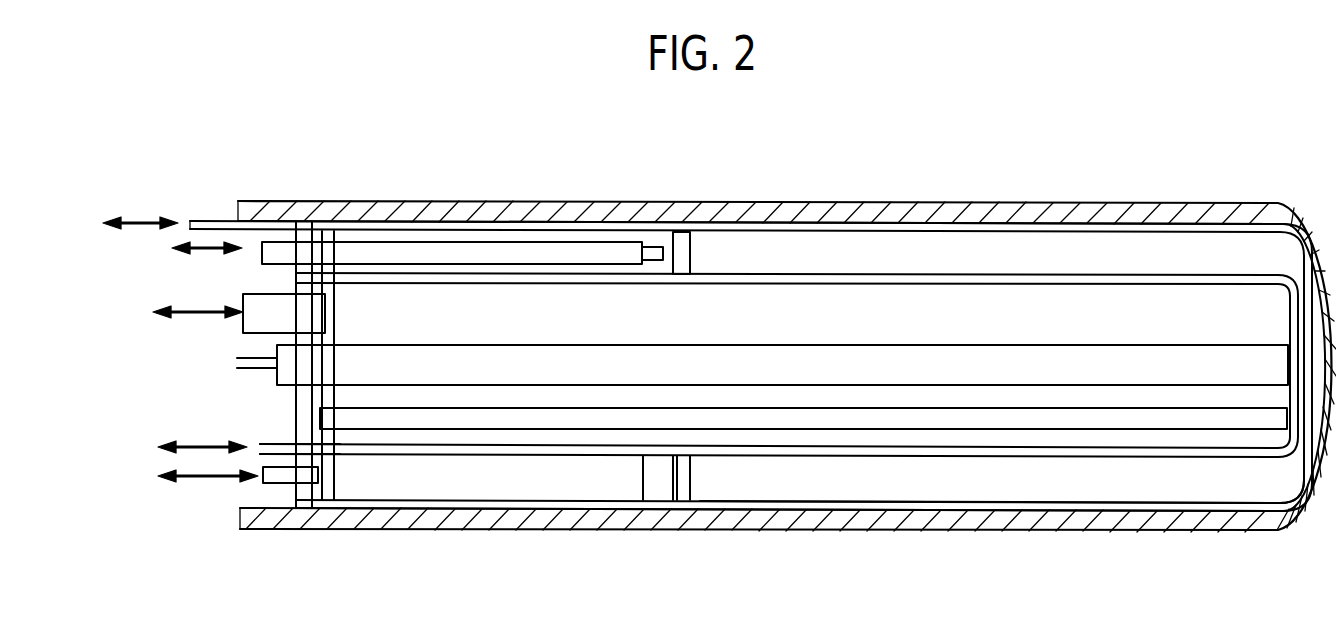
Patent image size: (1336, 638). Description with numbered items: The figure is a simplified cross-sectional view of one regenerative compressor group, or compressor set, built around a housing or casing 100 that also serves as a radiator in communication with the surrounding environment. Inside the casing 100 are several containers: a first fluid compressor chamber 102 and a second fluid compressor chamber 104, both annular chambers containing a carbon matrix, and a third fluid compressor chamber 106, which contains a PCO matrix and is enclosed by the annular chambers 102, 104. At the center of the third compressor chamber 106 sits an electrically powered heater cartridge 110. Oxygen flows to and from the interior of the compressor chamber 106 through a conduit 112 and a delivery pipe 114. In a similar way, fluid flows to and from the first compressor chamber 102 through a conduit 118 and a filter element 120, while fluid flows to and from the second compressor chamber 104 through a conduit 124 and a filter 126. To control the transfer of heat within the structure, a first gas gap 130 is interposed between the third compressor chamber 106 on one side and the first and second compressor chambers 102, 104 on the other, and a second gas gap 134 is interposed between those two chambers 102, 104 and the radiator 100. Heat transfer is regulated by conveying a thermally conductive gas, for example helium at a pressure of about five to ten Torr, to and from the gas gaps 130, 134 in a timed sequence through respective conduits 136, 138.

The housing 100 is at (277, 522).
The first fluid compressor chamber 102 is at (402, 490).
The second fluid compressor chamber 104 is at (973, 487).
The third fluid compressor chamber 106 is at (943, 308).
The heater cartridge 110 is at (297, 367).
The conduit 112 is at (265, 320).
The delivery pipe 114 is at (845, 410).
The conduit 118 is at (267, 480).
The filter element 120 is at (320, 491).
The conduit 124 is at (463, 252).
The filter 126 is at (686, 248).
The first gas gap 130 is at (1082, 455).
The second gas gap 134 is at (585, 500).
The conduit 136 is at (200, 444).
The conduit 138 is at (222, 219).